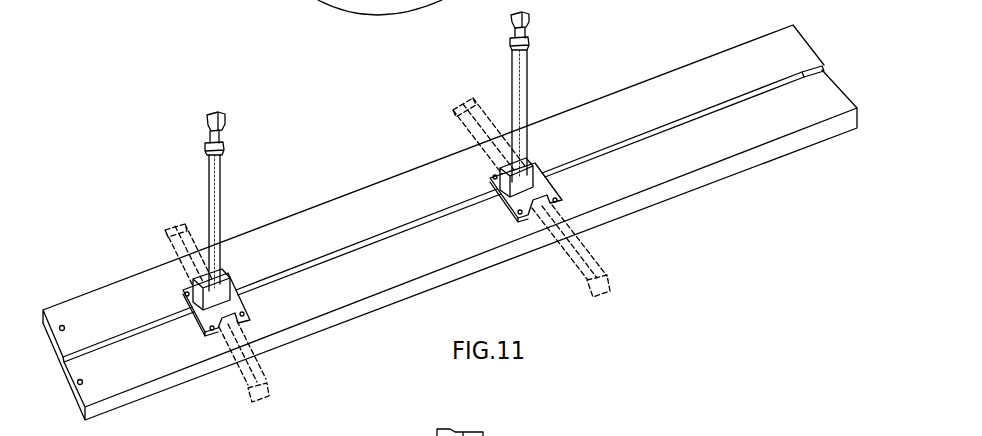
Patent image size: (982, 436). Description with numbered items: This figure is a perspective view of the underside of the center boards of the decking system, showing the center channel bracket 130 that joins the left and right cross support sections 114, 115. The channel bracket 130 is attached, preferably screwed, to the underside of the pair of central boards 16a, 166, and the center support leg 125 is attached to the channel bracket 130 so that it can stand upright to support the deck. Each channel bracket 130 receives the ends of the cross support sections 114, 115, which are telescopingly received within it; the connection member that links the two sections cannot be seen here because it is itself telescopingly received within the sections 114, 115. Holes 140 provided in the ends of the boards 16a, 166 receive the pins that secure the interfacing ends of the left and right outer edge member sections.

The central board 16a is at (798, 50).
The second board section 166 is at (833, 97).
The holes 140 is at (65, 326).
The support leg 125 is at (222, 170).
The center channel bracket 130 is at (249, 303).
The right cross support section 115 is at (188, 217).
The left cross support section 114 is at (258, 373).